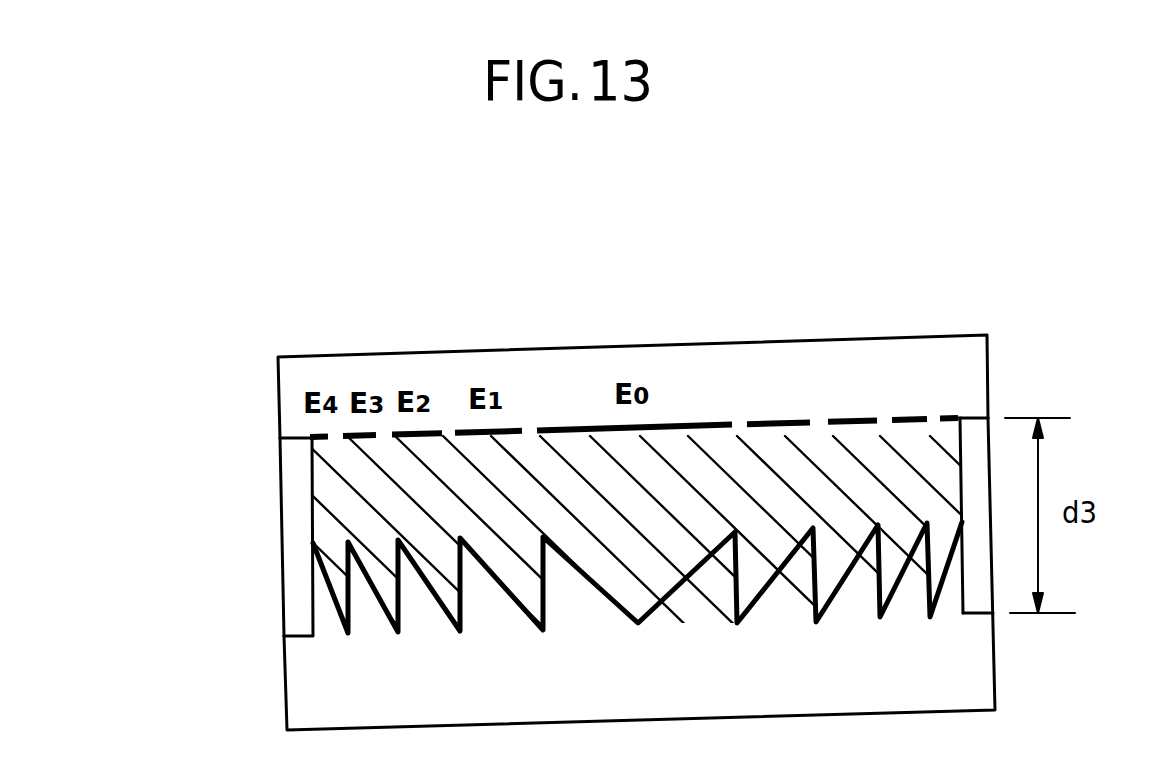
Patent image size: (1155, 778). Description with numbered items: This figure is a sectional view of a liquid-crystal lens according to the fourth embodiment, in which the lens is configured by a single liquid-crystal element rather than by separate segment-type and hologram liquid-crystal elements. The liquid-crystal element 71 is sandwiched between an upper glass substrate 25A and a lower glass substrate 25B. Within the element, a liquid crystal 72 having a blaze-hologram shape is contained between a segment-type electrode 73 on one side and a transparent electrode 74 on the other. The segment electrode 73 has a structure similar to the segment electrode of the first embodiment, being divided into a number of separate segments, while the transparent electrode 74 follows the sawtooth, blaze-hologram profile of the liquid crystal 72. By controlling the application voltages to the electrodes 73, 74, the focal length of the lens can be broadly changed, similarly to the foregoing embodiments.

The glass substrate 25A is at (972, 386).
The glass substrate 25B is at (982, 666).
The liquid-crystal element 71 is at (249, 437).
The liquid crystal 72 is at (697, 452).
The segment-type electrode 73 is at (768, 426).
The transparent electrode 74 is at (833, 600).